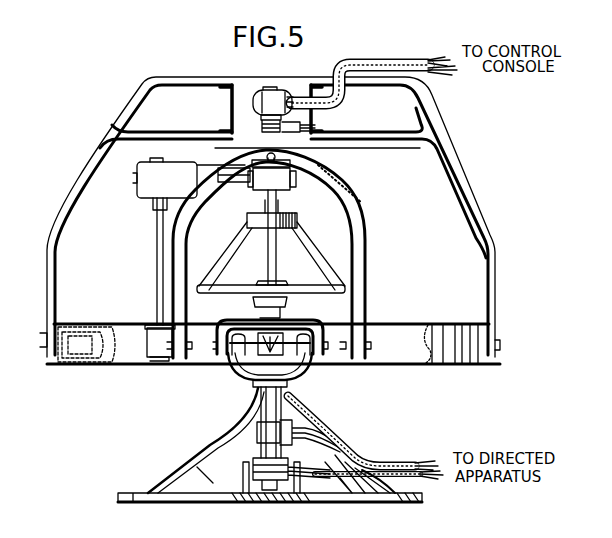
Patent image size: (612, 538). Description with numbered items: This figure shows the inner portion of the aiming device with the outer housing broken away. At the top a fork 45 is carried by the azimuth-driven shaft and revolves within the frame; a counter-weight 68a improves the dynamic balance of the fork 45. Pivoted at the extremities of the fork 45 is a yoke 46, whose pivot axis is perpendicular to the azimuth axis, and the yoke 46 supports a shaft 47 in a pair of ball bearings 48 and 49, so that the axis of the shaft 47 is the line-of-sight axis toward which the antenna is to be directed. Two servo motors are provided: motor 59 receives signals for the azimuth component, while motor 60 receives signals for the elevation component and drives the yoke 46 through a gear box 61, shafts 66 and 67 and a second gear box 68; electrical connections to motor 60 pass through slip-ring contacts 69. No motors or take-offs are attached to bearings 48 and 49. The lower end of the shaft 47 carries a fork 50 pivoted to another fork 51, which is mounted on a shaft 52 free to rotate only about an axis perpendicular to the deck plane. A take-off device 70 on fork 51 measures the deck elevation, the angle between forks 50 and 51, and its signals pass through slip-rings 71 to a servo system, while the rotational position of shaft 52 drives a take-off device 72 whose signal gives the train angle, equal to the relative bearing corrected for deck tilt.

The fork 45 is at (327, 168).
The yoke 46 is at (226, 243).
The shaft 47 is at (276, 256).
The ball bearing 48 is at (298, 220).
The ball bearing 49 is at (264, 284).
The fork 50 is at (295, 325).
The fork 51 is at (304, 366).
The shaft 52 is at (298, 404).
The motor 59 is at (253, 100).
The motor 60 is at (285, 191).
The gear box 61 is at (137, 183).
The shaft 66 is at (240, 178).
The shaft 67 is at (156, 243).
The second gear box 68 is at (150, 325).
The counter-weight 68a is at (357, 186).
The slip-ring contacts 69 is at (258, 118).
The take-off device 70 is at (252, 358).
The slip-rings 71 is at (257, 430).
The take-off device 72 is at (256, 478).